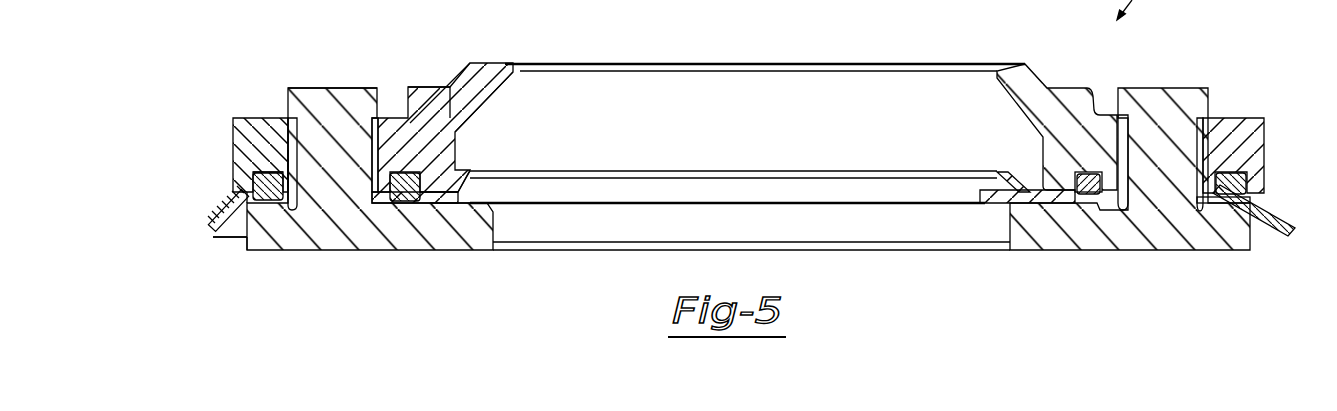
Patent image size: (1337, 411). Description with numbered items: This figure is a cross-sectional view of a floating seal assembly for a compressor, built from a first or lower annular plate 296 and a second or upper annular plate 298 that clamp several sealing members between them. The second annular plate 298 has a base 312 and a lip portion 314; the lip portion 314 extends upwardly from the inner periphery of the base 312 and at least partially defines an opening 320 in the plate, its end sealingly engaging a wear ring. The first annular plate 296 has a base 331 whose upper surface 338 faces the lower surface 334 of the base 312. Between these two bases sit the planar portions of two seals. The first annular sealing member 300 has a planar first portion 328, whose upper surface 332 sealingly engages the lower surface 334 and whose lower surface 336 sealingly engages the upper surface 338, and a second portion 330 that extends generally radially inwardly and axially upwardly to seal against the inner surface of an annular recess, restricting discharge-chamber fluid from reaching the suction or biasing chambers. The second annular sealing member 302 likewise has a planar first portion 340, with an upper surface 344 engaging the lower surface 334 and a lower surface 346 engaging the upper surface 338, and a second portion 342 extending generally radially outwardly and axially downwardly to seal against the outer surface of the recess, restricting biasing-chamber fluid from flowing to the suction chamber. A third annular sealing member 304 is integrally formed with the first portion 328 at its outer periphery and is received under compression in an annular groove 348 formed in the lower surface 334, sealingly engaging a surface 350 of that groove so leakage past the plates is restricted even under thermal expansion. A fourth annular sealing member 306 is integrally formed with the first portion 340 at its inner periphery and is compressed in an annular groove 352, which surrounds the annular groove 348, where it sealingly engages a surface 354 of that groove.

The first annular plate 296 is at (316, 258).
The second annular plate 298 is at (215, 164).
The first annular sealing member 300 is at (653, 180).
The second annular sealing member 302 is at (178, 232).
The third annular sealing member 304 is at (396, 176).
The fourth annular sealing member 306 is at (268, 190).
The base 312 is at (240, 137).
The lip portion 314 is at (490, 70).
The opening 320 is at (650, 68).
The first portion 328 is at (433, 200).
The second portion 330 is at (490, 182).
The base 331 is at (252, 245).
The upper surface 332 is at (452, 195).
The lower surface 334 is at (372, 198).
The lower surface 336 is at (463, 205).
The upper surface 338 is at (465, 190).
The first portion 340 is at (232, 198).
The second portion 342 is at (213, 218).
The upper surface 344 is at (238, 190).
The lower surface 346 is at (248, 200).
The annular groove 348 is at (410, 188).
The surface 350 is at (400, 174).
The annular groove 352 is at (280, 176).
The surface 354 is at (258, 187).